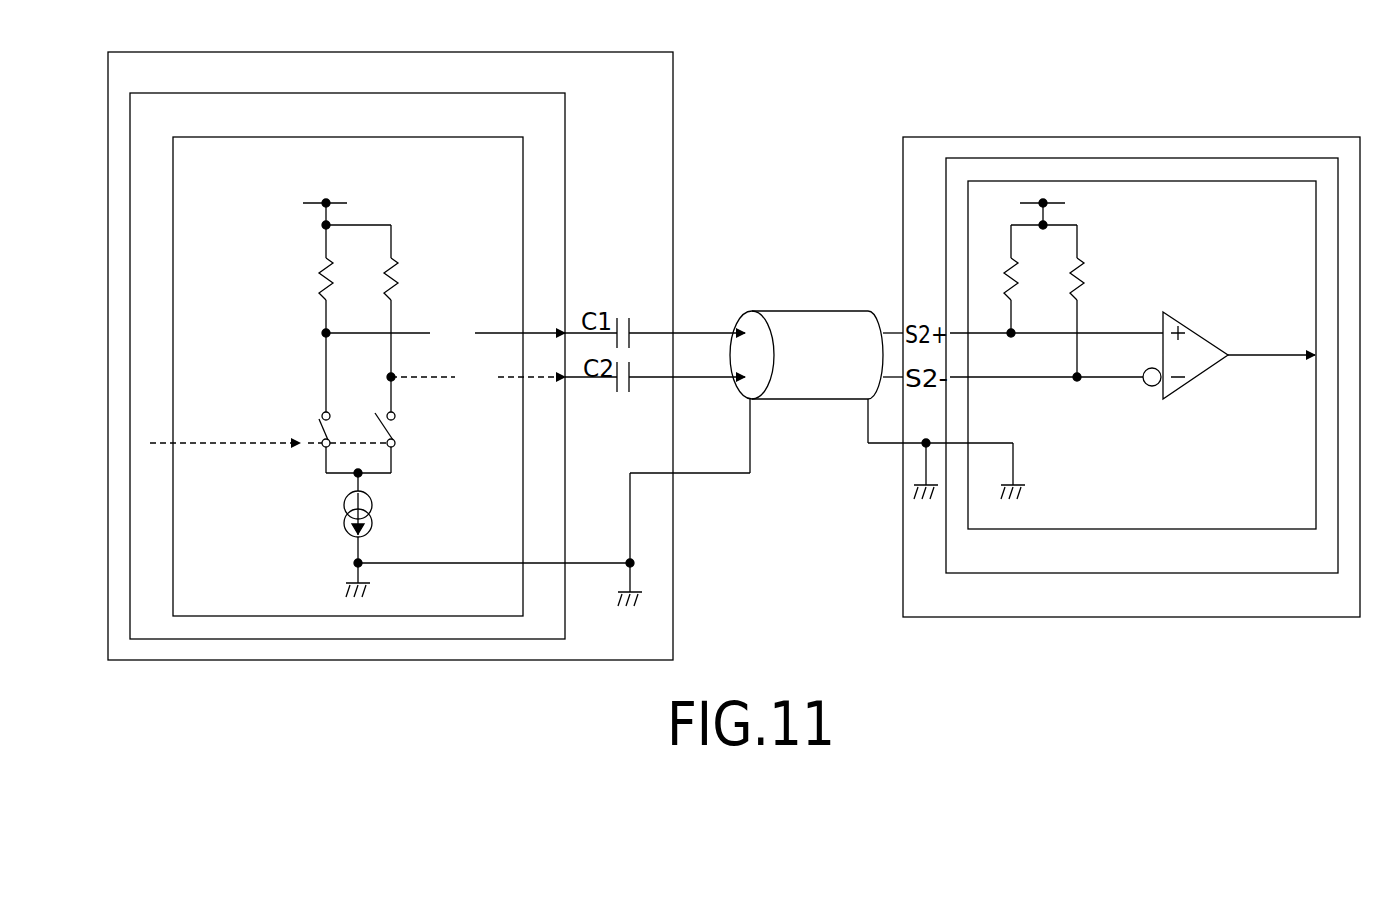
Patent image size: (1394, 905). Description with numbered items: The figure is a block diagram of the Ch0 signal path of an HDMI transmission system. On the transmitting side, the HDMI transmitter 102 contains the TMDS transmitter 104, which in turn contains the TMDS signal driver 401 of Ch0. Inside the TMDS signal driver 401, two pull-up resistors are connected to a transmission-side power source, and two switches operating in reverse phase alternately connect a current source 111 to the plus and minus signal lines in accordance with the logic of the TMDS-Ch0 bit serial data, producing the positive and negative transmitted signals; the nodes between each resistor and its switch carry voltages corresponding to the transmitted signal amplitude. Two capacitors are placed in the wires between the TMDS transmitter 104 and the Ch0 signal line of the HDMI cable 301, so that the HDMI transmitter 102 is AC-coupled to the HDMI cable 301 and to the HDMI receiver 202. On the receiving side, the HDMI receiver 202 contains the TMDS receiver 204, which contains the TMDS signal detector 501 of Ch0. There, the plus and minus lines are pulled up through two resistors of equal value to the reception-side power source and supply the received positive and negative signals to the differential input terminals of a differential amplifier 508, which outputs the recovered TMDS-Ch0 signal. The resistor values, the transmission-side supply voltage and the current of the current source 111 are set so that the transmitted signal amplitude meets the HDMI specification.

The HDMI transmitter 102 is at (390, 356).
The TMDS transmitter 104 is at (347, 366).
The TMDS signal driver 401 is at (357, 376).
The current source 111 is at (372, 501).
The HDMI cable 301 is at (806, 327).
The HDMI receiver 202 is at (1131, 377).
The TMDS receiver 204 is at (1142, 365).
The TMDS signal detector 501 is at (1142, 355).
The differential amplifier 508 is at (1200, 379).